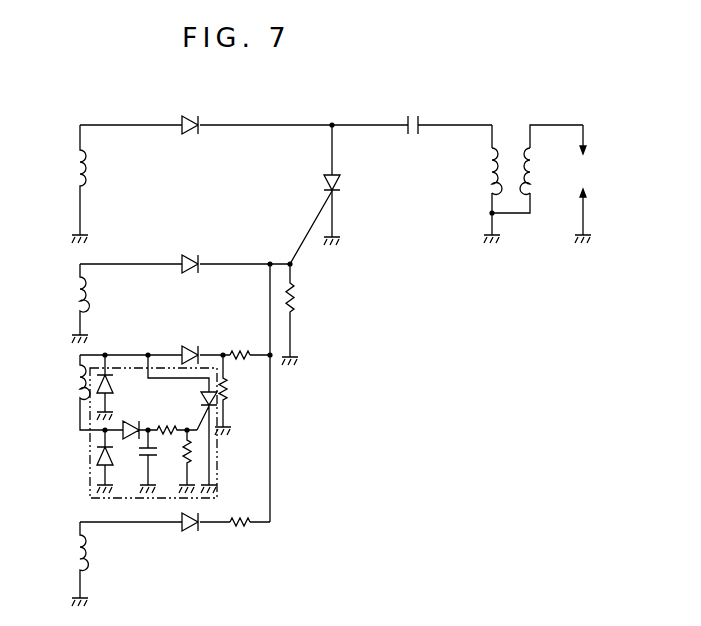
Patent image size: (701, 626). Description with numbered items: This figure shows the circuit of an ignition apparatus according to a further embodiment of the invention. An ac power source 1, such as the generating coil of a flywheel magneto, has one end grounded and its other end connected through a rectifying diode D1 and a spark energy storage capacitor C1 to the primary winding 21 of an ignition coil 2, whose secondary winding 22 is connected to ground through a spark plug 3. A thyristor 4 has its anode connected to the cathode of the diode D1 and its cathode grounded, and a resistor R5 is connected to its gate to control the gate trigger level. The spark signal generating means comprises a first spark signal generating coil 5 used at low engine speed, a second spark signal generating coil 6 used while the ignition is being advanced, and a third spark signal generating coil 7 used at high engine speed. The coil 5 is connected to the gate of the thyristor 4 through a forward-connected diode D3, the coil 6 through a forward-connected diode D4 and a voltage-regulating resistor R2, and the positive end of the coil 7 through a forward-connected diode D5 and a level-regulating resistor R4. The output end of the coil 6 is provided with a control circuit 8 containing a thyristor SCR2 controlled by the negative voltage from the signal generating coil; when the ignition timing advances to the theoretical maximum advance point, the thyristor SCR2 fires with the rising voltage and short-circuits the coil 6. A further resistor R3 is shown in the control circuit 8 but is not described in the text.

The ac power source 1 is at (69, 167).
The ignition coil 2 is at (512, 164).
The primary winding 21 is at (480, 175).
The secondary winding 22 is at (533, 174).
The spark plug 3 is at (588, 175).
The thyristor 4 is at (341, 189).
The first spark signal generating coil 5 is at (70, 299).
The second spark signal generating coil 6 is at (72, 386).
The third spark signal generating coil 7 is at (70, 558).
The control circuit 8 is at (148, 426).
The rectifying diode D1 is at (191, 112).
The forward-connected diode D3 is at (191, 251).
The forward-connected diode D4 is at (191, 346).
The forward-connected diode D5 is at (192, 531).
The capacitor C1 is at (414, 112).
The voltage-regulating resistor R2 is at (240, 349).
The resistor R3 is at (226, 394).
The resistor R4 is at (244, 518).
The resistor R5 is at (295, 297).
The thyristor SCR2 is at (202, 399).